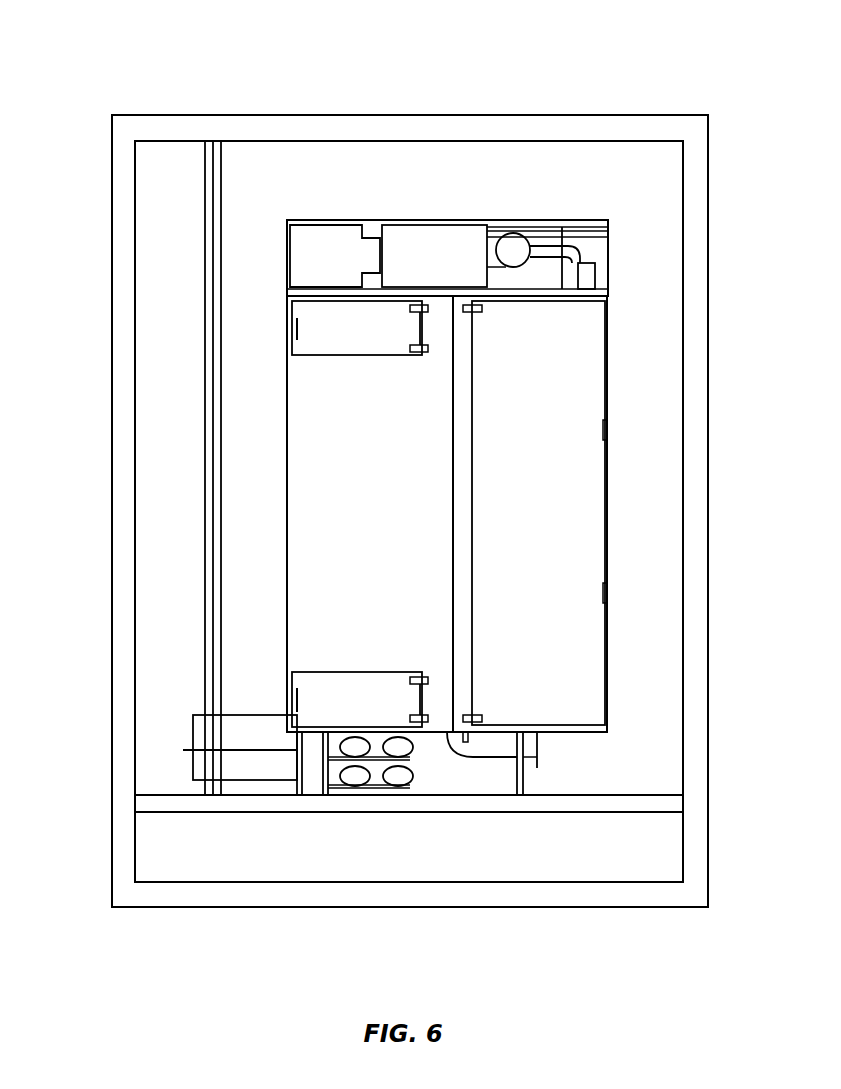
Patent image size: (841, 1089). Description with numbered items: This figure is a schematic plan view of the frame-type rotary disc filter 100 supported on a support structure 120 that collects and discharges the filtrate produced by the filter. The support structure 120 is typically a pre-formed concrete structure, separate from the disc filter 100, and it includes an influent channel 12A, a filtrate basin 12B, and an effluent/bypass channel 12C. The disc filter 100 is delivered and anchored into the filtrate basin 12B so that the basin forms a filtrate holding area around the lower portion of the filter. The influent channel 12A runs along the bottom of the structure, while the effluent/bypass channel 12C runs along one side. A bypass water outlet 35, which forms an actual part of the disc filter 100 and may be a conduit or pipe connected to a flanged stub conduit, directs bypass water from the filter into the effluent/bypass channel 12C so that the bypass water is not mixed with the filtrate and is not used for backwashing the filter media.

The support structure 120 is at (583, 77).
The filtrate basin 12B is at (648, 367).
The effluent/bypass channel 12C is at (162, 727).
The influent channel 12A is at (585, 845).
The frame-type rotary disc filter 100 is at (620, 567).
The bypass water outlet 35 is at (302, 763).